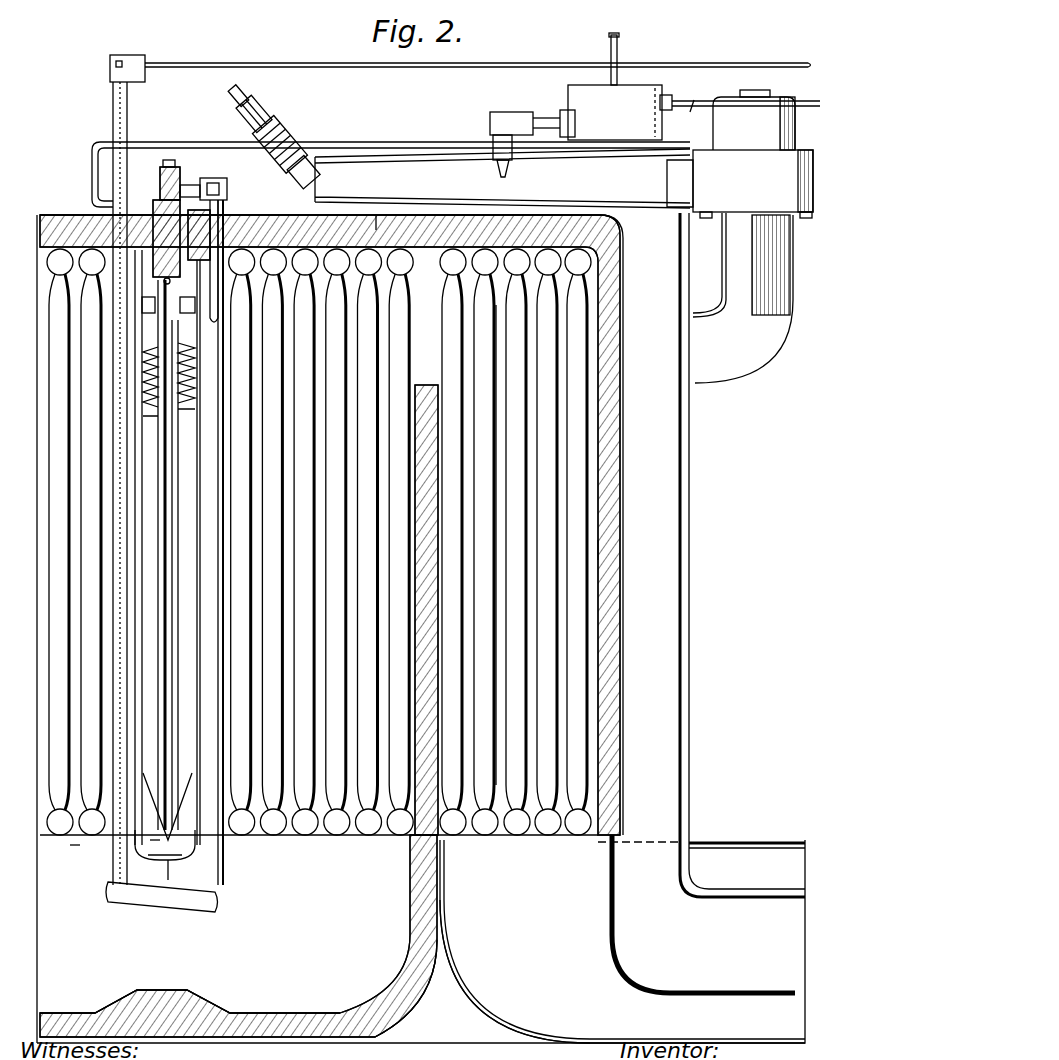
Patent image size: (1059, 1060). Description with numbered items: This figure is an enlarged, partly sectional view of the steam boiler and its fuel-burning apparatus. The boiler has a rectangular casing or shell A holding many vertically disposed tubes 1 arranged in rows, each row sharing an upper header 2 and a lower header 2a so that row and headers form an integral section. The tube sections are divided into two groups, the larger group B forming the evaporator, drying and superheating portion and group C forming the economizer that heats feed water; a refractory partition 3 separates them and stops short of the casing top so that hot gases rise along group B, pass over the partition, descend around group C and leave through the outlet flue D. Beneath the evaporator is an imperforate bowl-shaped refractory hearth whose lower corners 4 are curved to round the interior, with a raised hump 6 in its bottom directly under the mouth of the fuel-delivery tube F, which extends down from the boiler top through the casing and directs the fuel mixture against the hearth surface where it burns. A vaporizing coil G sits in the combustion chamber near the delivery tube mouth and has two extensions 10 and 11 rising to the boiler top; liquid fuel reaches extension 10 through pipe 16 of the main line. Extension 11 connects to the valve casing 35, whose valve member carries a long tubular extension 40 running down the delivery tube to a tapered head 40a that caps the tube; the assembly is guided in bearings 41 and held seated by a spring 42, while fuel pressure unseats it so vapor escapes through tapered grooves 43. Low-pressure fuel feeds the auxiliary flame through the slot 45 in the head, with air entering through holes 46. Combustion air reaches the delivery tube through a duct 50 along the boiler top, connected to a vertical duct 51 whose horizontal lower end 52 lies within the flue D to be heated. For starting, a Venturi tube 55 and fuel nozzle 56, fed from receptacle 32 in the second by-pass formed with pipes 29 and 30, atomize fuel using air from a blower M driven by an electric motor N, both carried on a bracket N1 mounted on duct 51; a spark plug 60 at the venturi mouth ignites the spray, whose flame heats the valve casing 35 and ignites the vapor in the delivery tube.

The tubes 1 is at (545, 708).
The upper header 2 is at (62, 255).
The lower header 2a is at (306, 830).
The refractory wall or partition 3 is at (440, 446).
The lower corners and angles 4 is at (388, 1003).
The raised portion or hump 6 is at (165, 993).
The vaporizer extension 10 is at (113, 110).
The vaporizer extension 11 is at (222, 232).
The pipe 16 is at (478, 77).
The pipe 29 is at (681, 119).
The pipe 30 is at (618, 44).
The chamber or receptacle 32 is at (694, 112).
The valve casing 35 is at (162, 200).
The tubular extension 40 is at (170, 508).
The tapered head 40a is at (182, 848).
The bearings 41 is at (168, 312).
The spring 42 is at (183, 362).
The grooves 43 is at (376, 218).
The burner opening or slot 45 is at (135, 895).
The holes 46 is at (228, 280).
The conduit or duct 50 is at (346, 150).
The duct 51 is at (660, 498).
The lower end 52 is at (733, 855).
The Venturi tube 55 is at (418, 170).
The fuel nozzle 56 is at (515, 175).
The spark plug 60 is at (290, 130).
The casing or shell A is at (615, 552).
The tube group B is at (70, 848).
The tube group C is at (513, 638).
The outlet funnel or flue D is at (492, 998).
The fuel-delivery tube F is at (150, 840).
The coil of tube or pipe G is at (165, 884).
The blower or fan M is at (753, 184).
The electric motor N is at (754, 120).
The bracket N1 is at (740, 365).